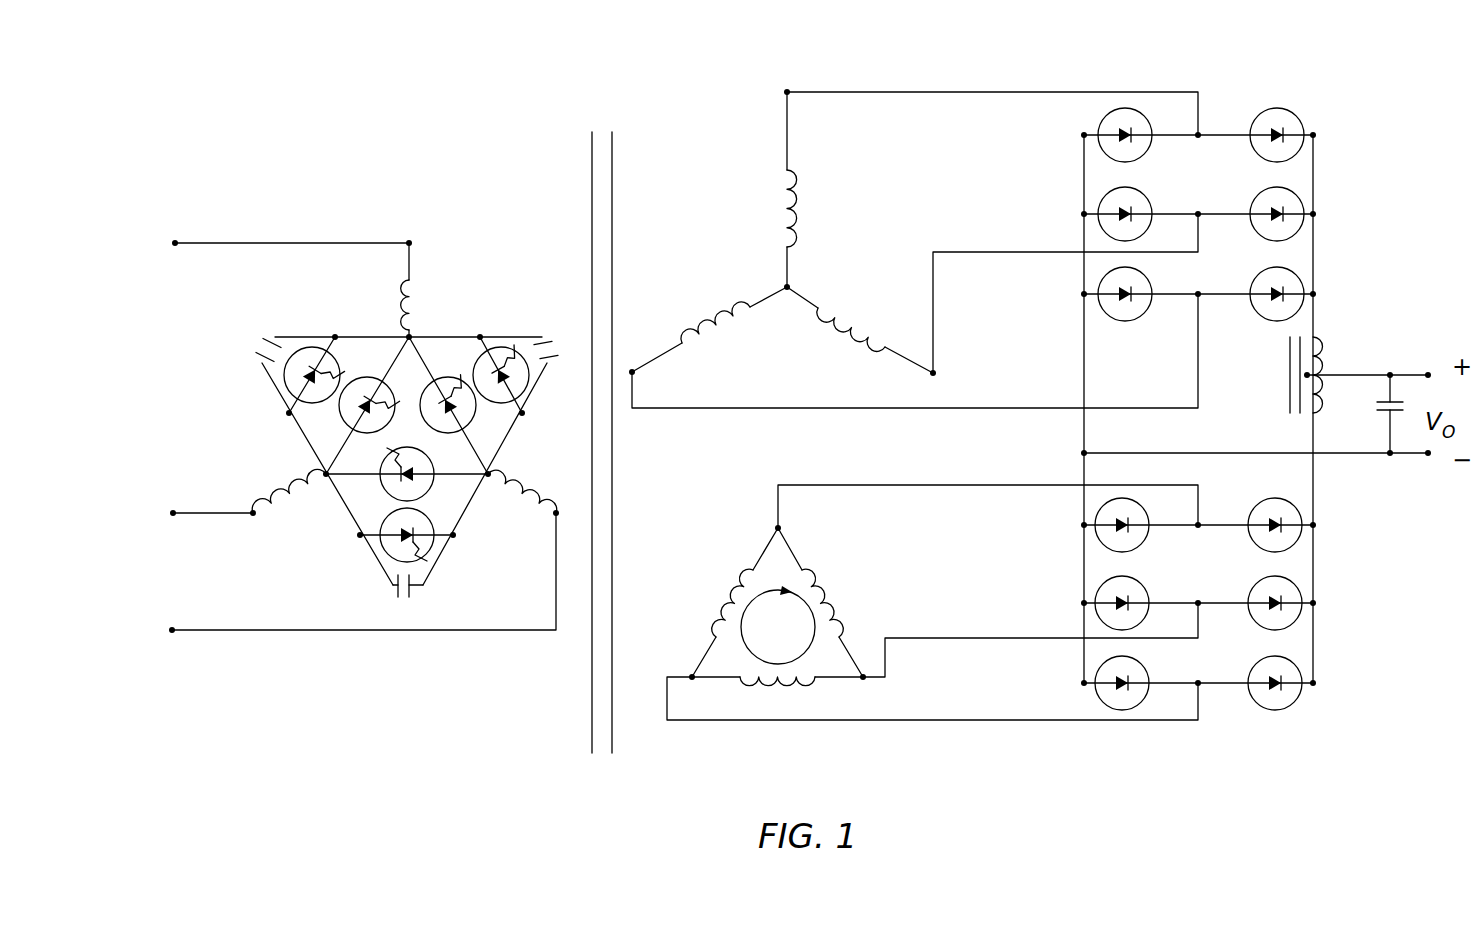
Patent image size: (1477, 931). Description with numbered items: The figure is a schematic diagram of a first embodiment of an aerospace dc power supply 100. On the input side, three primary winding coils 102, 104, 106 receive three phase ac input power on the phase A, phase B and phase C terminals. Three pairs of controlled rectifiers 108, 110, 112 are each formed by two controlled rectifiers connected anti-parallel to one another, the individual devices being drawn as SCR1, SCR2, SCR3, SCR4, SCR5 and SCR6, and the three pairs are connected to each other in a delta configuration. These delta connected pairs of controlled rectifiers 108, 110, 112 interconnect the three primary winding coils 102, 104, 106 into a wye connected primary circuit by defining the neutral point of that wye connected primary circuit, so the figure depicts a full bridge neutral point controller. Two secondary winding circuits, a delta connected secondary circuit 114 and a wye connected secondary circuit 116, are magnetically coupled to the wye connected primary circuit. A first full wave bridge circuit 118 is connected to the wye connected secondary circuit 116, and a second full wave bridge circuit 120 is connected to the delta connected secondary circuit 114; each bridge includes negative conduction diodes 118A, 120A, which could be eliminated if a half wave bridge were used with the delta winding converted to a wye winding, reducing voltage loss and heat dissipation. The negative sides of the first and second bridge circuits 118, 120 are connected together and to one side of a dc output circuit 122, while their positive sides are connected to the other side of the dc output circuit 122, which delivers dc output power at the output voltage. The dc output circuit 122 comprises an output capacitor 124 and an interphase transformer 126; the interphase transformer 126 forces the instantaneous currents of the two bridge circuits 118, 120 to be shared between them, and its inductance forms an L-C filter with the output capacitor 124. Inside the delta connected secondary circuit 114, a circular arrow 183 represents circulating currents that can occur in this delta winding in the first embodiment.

The aerospace dc power supply 100 is at (402, 750).
The primary winding coil 102 is at (412, 286).
The primary winding coil 104 is at (518, 498).
The primary winding coil 106 is at (262, 476).
The pair of controlled rectifiers 108 is at (313, 308).
The pair of controlled rectifiers 110 is at (347, 555).
The pair of controlled rectifiers 112 is at (460, 310).
The delta connected secondary circuit 114 is at (850, 572).
The wye connected secondary circuit 116 is at (845, 210).
The first full wave bridge circuit 118 is at (1272, 92).
The negative conduction diodes 118A is at (1098, 278).
The second full wave bridge circuit 120 is at (1221, 722).
The negative conduction diodes 120A is at (1094, 666).
The dc output circuit 122 is at (1378, 345).
The output capacitor 124 is at (1383, 415).
The interphase transformer 126 is at (1290, 378).
The circular arrow 183 is at (745, 652).
The silicon controlled rectifier 1 SCR1 is at (330, 428).
The silicon controlled rectifier 2 SCR2 is at (292, 392).
The silicon controlled rectifier 3 SCR3 is at (380, 484).
The silicon controlled rectifier 4 SCR4 is at (440, 565).
The silicon controlled rectifier 5 SCR5 is at (498, 372).
The silicon controlled rectifier 6 SCR6 is at (527, 402).